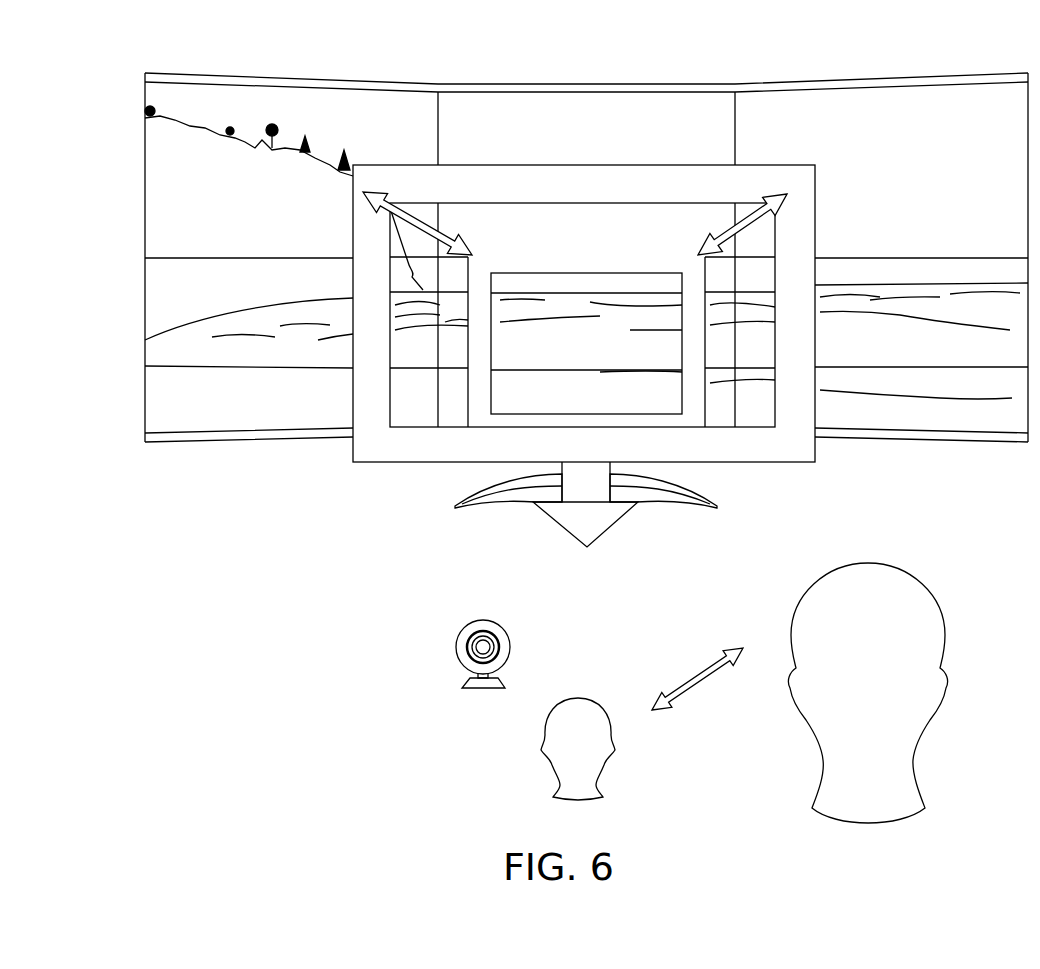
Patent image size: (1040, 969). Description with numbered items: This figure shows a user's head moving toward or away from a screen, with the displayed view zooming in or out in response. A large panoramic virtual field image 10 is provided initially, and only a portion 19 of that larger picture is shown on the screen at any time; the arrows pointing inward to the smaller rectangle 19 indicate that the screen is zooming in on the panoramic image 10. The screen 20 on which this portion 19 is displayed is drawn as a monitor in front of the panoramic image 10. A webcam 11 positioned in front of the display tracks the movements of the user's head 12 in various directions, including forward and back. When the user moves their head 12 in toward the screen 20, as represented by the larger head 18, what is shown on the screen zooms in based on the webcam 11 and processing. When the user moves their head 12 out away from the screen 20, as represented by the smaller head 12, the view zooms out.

The large panoramic virtual field image 10 is at (183, 73).
The display device / monitor 20 is at (393, 445).
The portion of the larger picture shown on the screen 19 is at (692, 415).
The webcam 11 is at (456, 645).
The head 12 is at (547, 742).
The larger head 18 is at (947, 617).